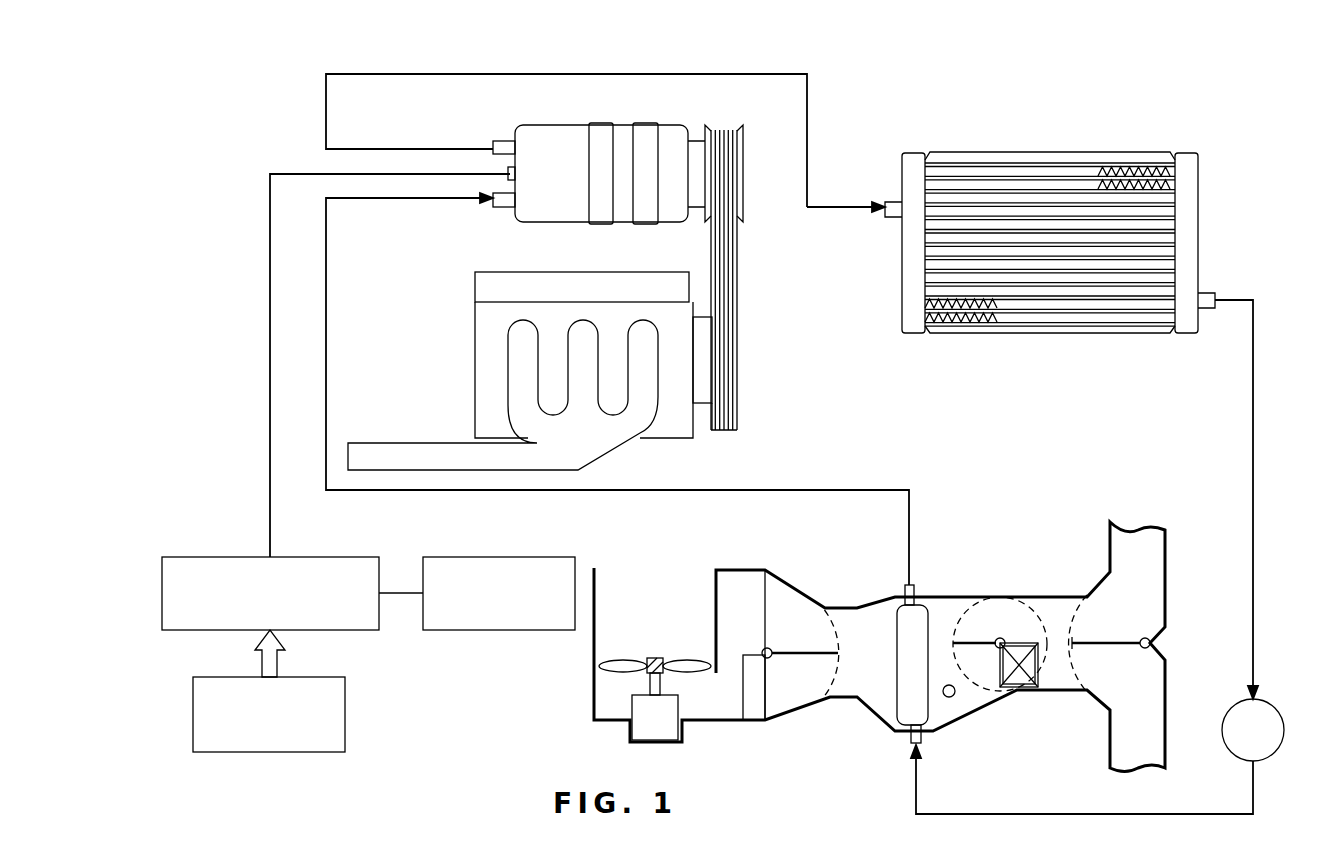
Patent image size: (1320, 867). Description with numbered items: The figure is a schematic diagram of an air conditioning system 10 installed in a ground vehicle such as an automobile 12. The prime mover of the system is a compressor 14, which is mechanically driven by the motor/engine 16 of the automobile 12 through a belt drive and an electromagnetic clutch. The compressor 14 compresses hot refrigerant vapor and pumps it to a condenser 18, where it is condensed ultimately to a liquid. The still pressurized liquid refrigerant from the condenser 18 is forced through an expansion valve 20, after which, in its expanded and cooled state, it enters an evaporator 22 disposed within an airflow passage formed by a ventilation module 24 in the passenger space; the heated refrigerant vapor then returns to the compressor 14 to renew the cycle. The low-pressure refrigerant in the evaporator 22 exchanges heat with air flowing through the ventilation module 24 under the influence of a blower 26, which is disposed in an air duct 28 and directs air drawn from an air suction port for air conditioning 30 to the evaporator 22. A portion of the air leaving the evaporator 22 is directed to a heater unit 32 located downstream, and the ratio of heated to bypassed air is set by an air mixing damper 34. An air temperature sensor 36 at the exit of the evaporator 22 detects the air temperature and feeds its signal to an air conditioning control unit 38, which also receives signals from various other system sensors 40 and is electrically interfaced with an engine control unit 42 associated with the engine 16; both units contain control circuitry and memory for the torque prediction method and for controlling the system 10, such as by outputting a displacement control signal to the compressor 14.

The air conditioning system 10 is at (272, 108).
The automobile 12 is at (1058, 120).
The compressor 14 is at (680, 125).
The motor/engine 16 is at (475, 323).
The condenser 18 is at (1147, 153).
The expansion valve 20 is at (1268, 705).
The evaporator 22 is at (930, 707).
The ventilation module 24 is at (1018, 595).
The blower 26 is at (605, 667).
The air duct 28 is at (785, 708).
The air suction port for air conditioning 30 is at (862, 650).
The heater unit 32 is at (1035, 672).
The air mixing damper 34 is at (978, 640).
The air temperature sensor 36 is at (955, 694).
The air conditioning control unit 38 is at (377, 613).
The system sensors 40 is at (342, 713).
The engine control unit 42 is at (488, 627).